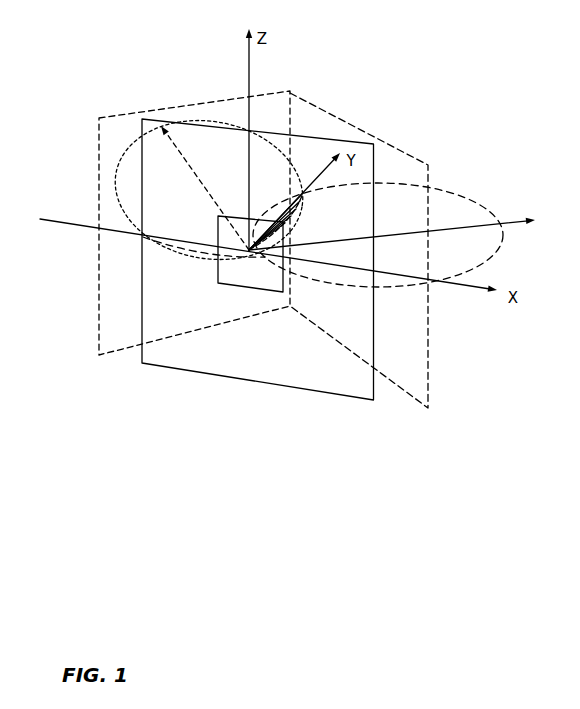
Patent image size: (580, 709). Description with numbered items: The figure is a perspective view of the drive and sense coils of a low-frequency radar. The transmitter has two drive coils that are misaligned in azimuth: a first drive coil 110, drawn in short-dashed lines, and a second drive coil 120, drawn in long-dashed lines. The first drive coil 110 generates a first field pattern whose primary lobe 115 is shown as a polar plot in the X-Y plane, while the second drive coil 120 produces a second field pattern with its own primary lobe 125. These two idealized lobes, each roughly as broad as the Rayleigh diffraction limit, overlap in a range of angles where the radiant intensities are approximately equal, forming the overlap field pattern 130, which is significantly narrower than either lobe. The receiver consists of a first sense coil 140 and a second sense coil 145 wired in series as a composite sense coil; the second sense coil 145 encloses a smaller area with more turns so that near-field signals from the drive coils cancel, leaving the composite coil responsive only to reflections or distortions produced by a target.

The first drive coil 110 is at (99, 272).
The first field pattern primary lobe 115 is at (450, 192).
The second drive coil 120 is at (428, 370).
The second field pattern primary lobe 125 is at (203, 118).
The overlap field pattern 130 is at (283, 203).
The first sense coil 140 is at (275, 386).
The second sense coil 145 is at (265, 294).